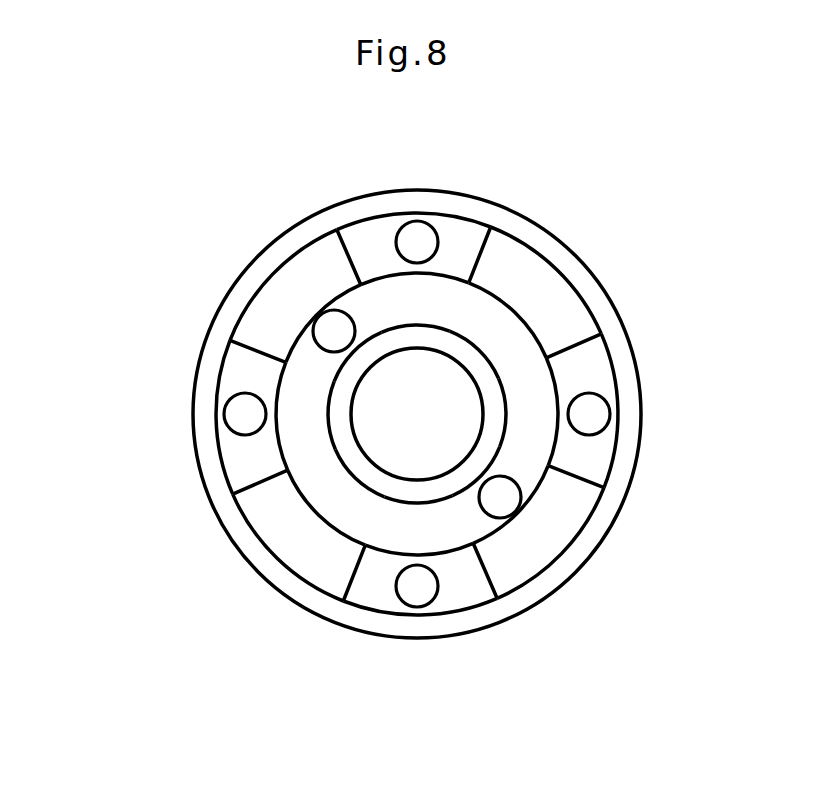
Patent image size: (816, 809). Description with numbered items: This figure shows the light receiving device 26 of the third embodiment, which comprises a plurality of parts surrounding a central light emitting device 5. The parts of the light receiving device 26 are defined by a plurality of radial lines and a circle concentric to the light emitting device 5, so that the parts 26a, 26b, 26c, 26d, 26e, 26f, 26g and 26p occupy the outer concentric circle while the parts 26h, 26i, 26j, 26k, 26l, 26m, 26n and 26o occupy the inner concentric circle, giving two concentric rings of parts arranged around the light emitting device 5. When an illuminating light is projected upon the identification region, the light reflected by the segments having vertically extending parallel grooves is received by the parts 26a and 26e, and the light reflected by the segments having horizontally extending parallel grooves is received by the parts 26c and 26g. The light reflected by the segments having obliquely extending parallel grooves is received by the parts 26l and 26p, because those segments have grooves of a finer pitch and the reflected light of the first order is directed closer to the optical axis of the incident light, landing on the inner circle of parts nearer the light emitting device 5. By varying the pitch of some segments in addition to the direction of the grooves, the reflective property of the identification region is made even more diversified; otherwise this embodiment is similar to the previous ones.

The light receiving device 26 is at (196, 349).
The light emitting device 5 is at (447, 387).
The part of light receiving device 26a is at (365, 235).
The part of light receiving device 26b is at (518, 263).
The part of light receiving device 26c is at (588, 460).
The part of light receiving device 26d is at (563, 530).
The part of light receiving device 26e is at (453, 600).
The part of light receiving device 26f is at (318, 570).
The part of light receiving device 26g is at (235, 380).
The part of light receiving device 26h is at (305, 352).
The part of light receiving device 26i is at (442, 288).
The part of light receiving device 26j is at (520, 345).
The part of light receiving device 26k is at (543, 380).
The part of light receiving device 26l is at (480, 530).
The part of light receiving device 26m is at (392, 542).
The part of light receiving device 26n is at (325, 490).
The part of light receiving device 26o is at (293, 442).
The part of light receiving device 26p is at (323, 255).